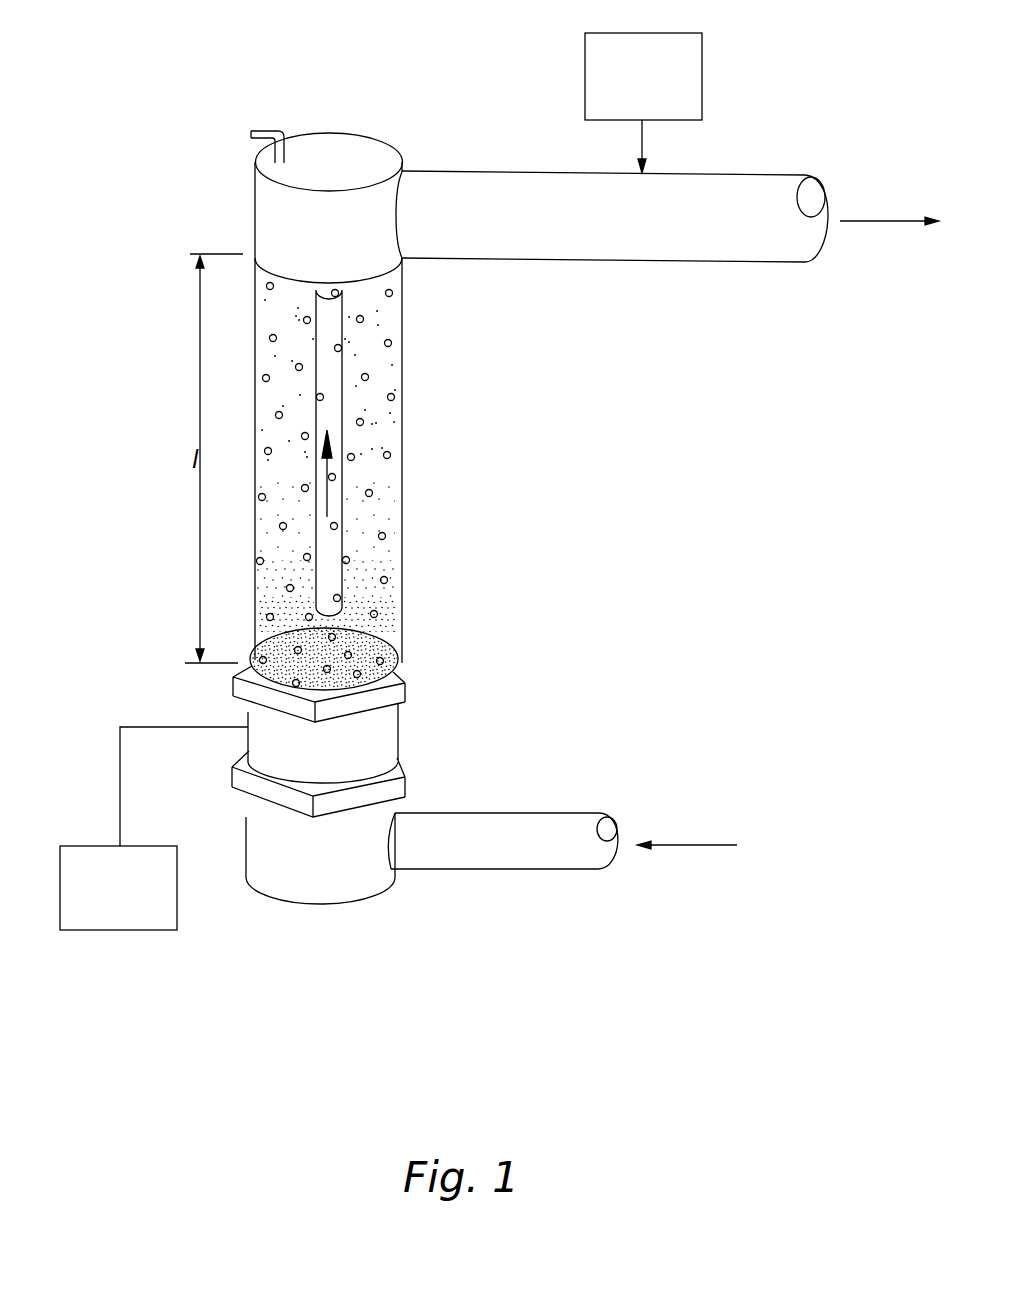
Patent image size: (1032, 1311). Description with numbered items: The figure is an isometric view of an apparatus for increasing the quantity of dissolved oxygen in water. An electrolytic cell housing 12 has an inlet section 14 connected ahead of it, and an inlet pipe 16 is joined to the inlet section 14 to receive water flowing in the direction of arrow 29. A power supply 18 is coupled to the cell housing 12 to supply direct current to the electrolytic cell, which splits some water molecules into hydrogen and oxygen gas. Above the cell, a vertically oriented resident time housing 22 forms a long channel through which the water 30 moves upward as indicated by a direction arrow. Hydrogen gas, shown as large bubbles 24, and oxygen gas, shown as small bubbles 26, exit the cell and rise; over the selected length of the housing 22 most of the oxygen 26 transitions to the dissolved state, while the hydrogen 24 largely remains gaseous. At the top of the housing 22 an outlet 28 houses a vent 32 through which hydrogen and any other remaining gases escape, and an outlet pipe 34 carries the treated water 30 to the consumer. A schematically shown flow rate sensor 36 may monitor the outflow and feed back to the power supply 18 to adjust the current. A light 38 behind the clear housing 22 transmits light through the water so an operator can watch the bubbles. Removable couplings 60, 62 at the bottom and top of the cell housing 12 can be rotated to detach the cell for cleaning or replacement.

The electrolytic cell housing 12 is at (400, 733).
The inlet section 14 is at (334, 906).
The inlet pipe 16 is at (515, 869).
The power supply 18 is at (116, 932).
The resident time housing 22 is at (402, 441).
The hydrogen bubbles 24 is at (369, 378).
The oxygen bubbles 26 is at (388, 598).
The outlet 28 is at (255, 216).
The direction arrow 29 is at (683, 845).
The water 30 is at (329, 492).
The vent 32 is at (263, 131).
The outlet pipe 34 is at (599, 262).
The flow rate sensor 36 is at (642, 33).
The light 38 is at (342, 337).
The removable coupling 60 is at (406, 785).
The removable coupling 62 is at (406, 676).